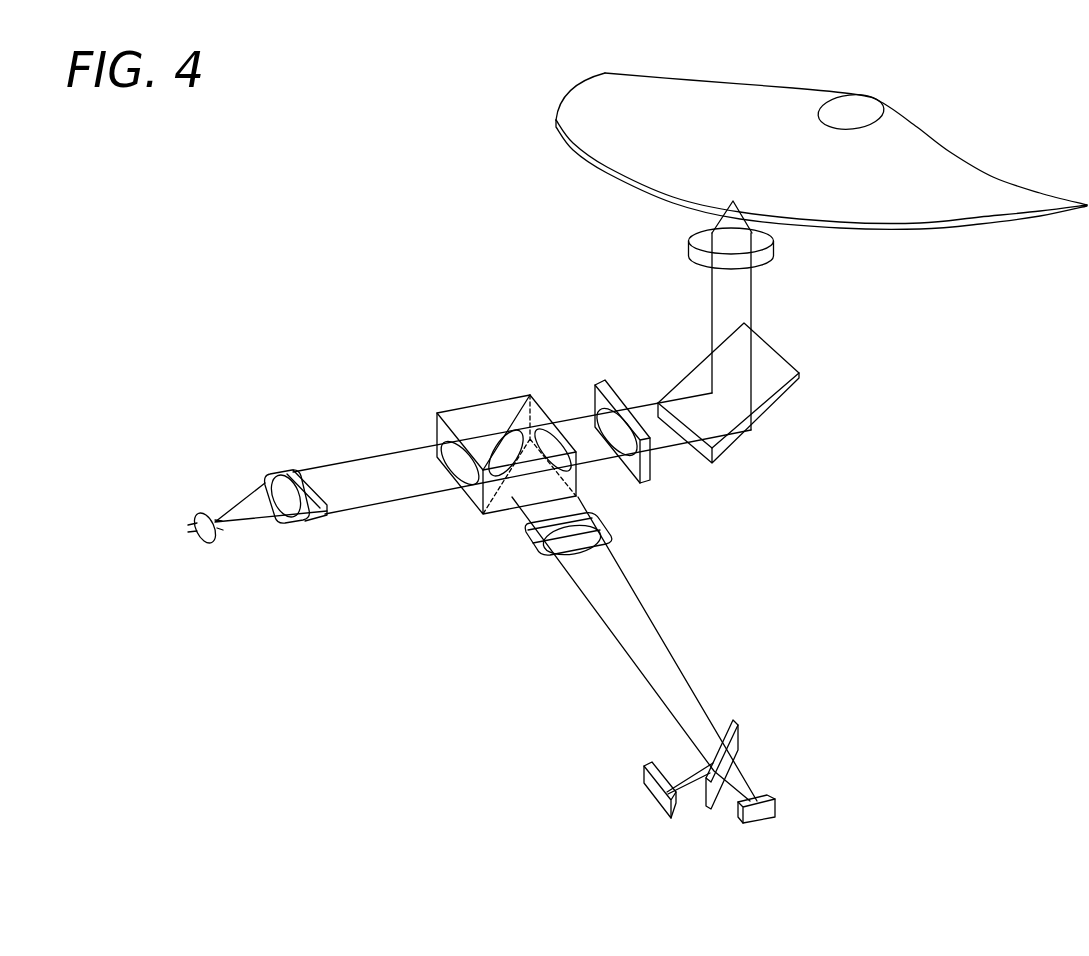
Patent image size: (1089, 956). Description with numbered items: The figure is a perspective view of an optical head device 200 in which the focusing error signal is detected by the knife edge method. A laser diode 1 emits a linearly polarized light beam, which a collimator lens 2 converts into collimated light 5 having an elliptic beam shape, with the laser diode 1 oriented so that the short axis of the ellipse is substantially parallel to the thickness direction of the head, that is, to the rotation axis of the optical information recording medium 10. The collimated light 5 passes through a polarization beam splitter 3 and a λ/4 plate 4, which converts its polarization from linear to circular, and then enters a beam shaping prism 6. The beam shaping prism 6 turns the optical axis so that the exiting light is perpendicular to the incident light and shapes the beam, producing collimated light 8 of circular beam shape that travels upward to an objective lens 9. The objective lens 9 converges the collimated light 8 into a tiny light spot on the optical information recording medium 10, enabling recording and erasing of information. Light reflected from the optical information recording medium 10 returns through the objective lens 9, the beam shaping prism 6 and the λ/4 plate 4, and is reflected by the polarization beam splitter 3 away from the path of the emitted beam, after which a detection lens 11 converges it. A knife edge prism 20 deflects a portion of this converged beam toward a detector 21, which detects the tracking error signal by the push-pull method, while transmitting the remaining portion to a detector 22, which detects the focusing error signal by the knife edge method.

The laser diode 1 is at (223, 530).
The collimator lens 2 is at (317, 517).
The polarization beam splitter 3 is at (468, 415).
The λ/4 plate 4 is at (598, 403).
The collimated light 5 is at (373, 463).
The beam shaping prism 6 is at (754, 393).
The collimated light 8 is at (740, 305).
The objective lens 9 is at (773, 252).
The optical information recording medium 10 is at (980, 212).
The detection lens 11 is at (607, 530).
The knife edge prism 20 is at (735, 740).
The detector 21 is at (648, 778).
The detector 22 is at (777, 805).
The optical head device 200 is at (900, 687).